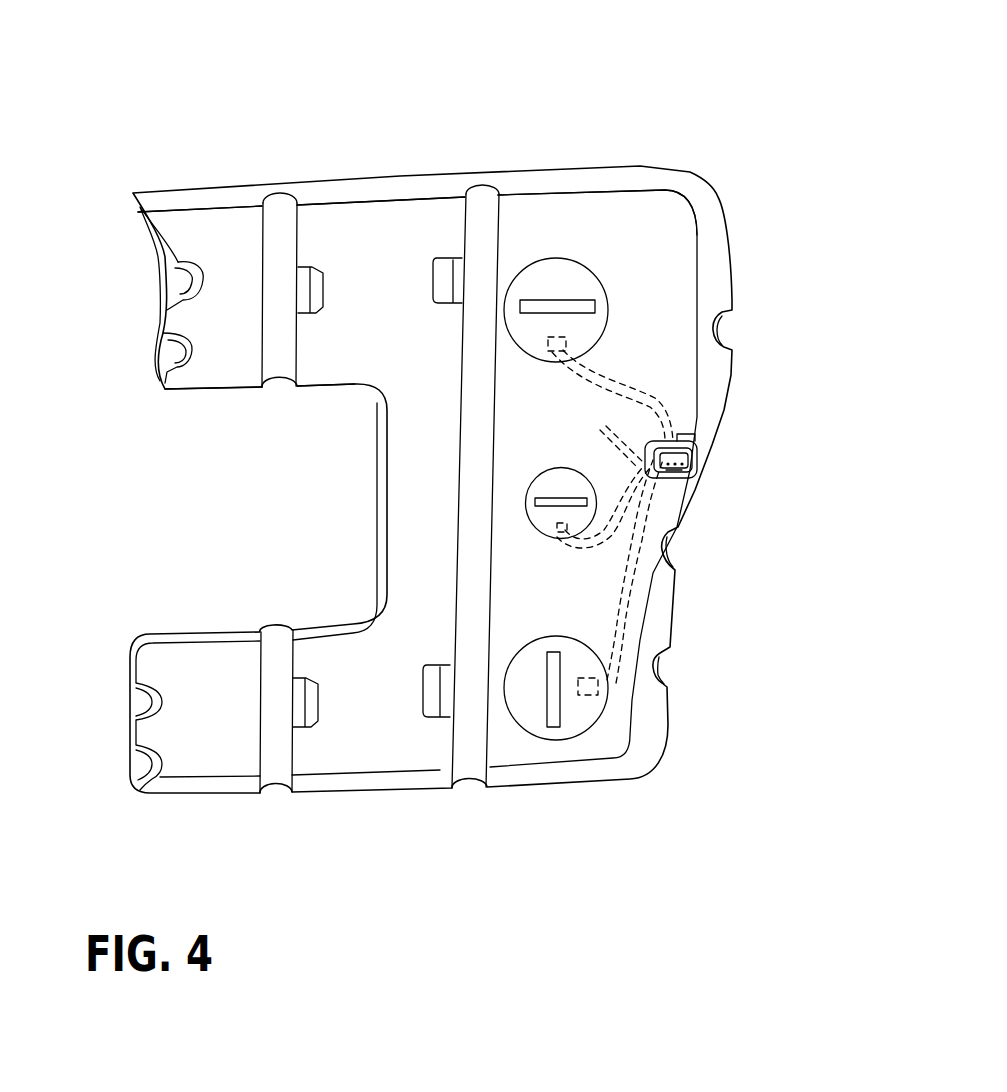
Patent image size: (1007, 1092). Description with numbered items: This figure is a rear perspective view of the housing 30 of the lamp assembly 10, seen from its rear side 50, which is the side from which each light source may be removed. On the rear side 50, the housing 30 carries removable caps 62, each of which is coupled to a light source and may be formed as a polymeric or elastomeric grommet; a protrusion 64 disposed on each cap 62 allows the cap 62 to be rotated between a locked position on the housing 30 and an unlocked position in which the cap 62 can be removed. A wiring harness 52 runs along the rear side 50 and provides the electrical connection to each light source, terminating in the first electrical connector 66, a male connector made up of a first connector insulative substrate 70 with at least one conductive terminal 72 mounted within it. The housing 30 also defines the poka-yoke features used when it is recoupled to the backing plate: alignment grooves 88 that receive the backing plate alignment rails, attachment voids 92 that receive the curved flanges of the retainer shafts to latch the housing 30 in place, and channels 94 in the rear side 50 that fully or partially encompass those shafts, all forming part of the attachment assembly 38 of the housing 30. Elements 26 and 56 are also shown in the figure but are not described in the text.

The lamp assembly 10 is at (634, 106).
The housing 26 is at (720, 192).
The housing 30 is at (670, 178).
The attachment assembly 38 is at (505, 218).
The rear side 50 is at (227, 256).
The wiring harness 52 is at (667, 437).
The side rib 56 is at (296, 444).
The removable cap 62 is at (573, 288).
The protrusion 64 is at (593, 303).
The first electrical connector 66 is at (702, 473).
The first connector insulative substrate 70 is at (685, 453).
The conductive terminal 72 is at (695, 445).
The alignment grooves 88 is at (183, 352).
The attachment voids 92 is at (443, 278).
The channels 94 is at (278, 205).